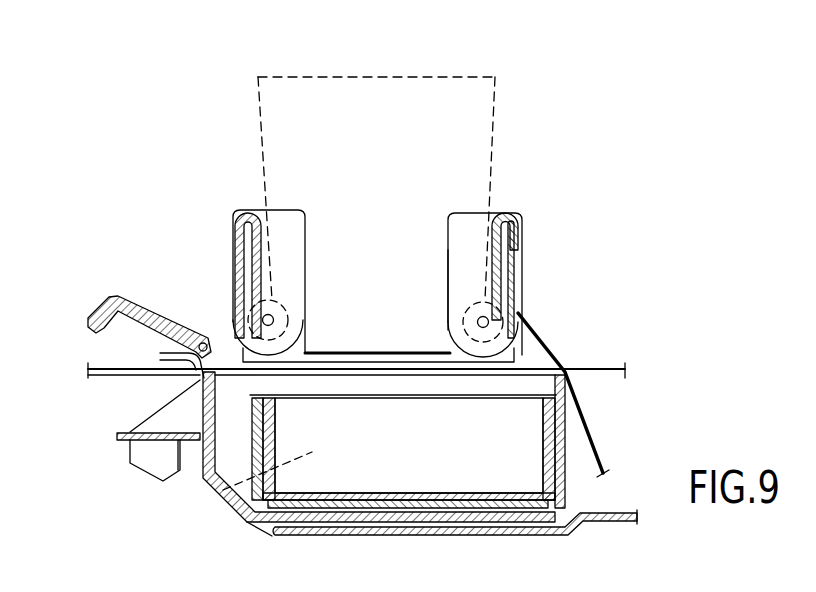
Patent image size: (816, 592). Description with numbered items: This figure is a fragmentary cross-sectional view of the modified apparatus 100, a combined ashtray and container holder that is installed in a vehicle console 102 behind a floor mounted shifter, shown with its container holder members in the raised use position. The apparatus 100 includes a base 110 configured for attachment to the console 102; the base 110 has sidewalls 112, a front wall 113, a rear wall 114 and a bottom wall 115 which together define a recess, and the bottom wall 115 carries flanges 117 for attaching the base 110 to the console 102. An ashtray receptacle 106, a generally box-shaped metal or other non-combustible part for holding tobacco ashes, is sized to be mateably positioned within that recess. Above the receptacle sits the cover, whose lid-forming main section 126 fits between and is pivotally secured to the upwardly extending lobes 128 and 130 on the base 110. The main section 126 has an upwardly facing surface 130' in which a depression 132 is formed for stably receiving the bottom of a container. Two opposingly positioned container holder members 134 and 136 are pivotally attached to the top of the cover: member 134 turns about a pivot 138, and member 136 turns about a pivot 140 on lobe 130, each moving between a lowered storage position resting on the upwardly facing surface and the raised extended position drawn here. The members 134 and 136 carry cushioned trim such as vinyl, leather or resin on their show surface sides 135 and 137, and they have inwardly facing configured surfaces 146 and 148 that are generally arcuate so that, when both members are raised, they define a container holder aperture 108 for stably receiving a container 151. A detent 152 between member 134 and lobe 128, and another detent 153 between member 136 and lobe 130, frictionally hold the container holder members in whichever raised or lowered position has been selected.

The modified apparatus 100 is at (578, 86).
The console 102 is at (275, 528).
The ashtray receptacle 106 is at (412, 462).
The container holder aperture 108 is at (420, 152).
The base 110 is at (566, 420).
The sidewalls 112 is at (208, 505).
The front wall 113 is at (252, 443).
The rear wall 114 is at (566, 443).
The bottom wall 115 is at (435, 535).
The flanges 117 is at (335, 520).
The main section 126 is at (403, 378).
The lobe 128 is at (535, 325).
The lobe 130 is at (127, 327).
The upwardly facing surface 130' is at (377, 307).
The depression 132 is at (378, 358).
The container holder member 134 is at (524, 216).
The show surface side 135 is at (522, 240).
The container holder member 136 is at (237, 230).
The show surface side 137 is at (237, 272).
The pivot 138 is at (522, 287).
The pivot 140 is at (272, 318).
The inwardly facing configured surface 146 is at (467, 227).
The inwardly facing configured surface 148 is at (283, 208).
The container 151 is at (497, 88).
The detent 152 is at (470, 342).
The detent 153 is at (275, 345).